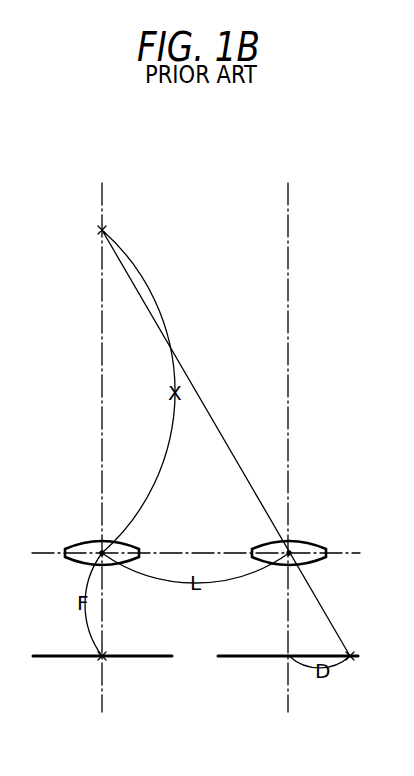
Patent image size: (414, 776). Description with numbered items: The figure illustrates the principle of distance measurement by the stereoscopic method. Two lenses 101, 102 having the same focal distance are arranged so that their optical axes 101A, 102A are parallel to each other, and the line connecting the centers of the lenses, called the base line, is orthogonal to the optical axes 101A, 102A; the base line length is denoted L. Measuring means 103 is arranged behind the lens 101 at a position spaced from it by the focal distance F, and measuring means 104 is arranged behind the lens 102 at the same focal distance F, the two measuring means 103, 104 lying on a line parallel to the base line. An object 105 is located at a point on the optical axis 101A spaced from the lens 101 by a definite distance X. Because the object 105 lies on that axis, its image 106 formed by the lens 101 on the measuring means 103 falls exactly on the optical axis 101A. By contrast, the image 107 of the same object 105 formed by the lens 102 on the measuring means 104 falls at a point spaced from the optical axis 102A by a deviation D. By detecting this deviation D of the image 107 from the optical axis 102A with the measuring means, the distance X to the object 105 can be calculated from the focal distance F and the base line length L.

The lens 101 is at (78, 541).
The lens 102 is at (305, 541).
The optical axis 101A is at (102, 410).
The optical axis 102A is at (288, 410).
The measuring means 103 is at (47, 659).
The measuring means 104 is at (237, 659).
The object 105 is at (106, 229).
The image 106 is at (105, 660).
The image 107 is at (350, 660).